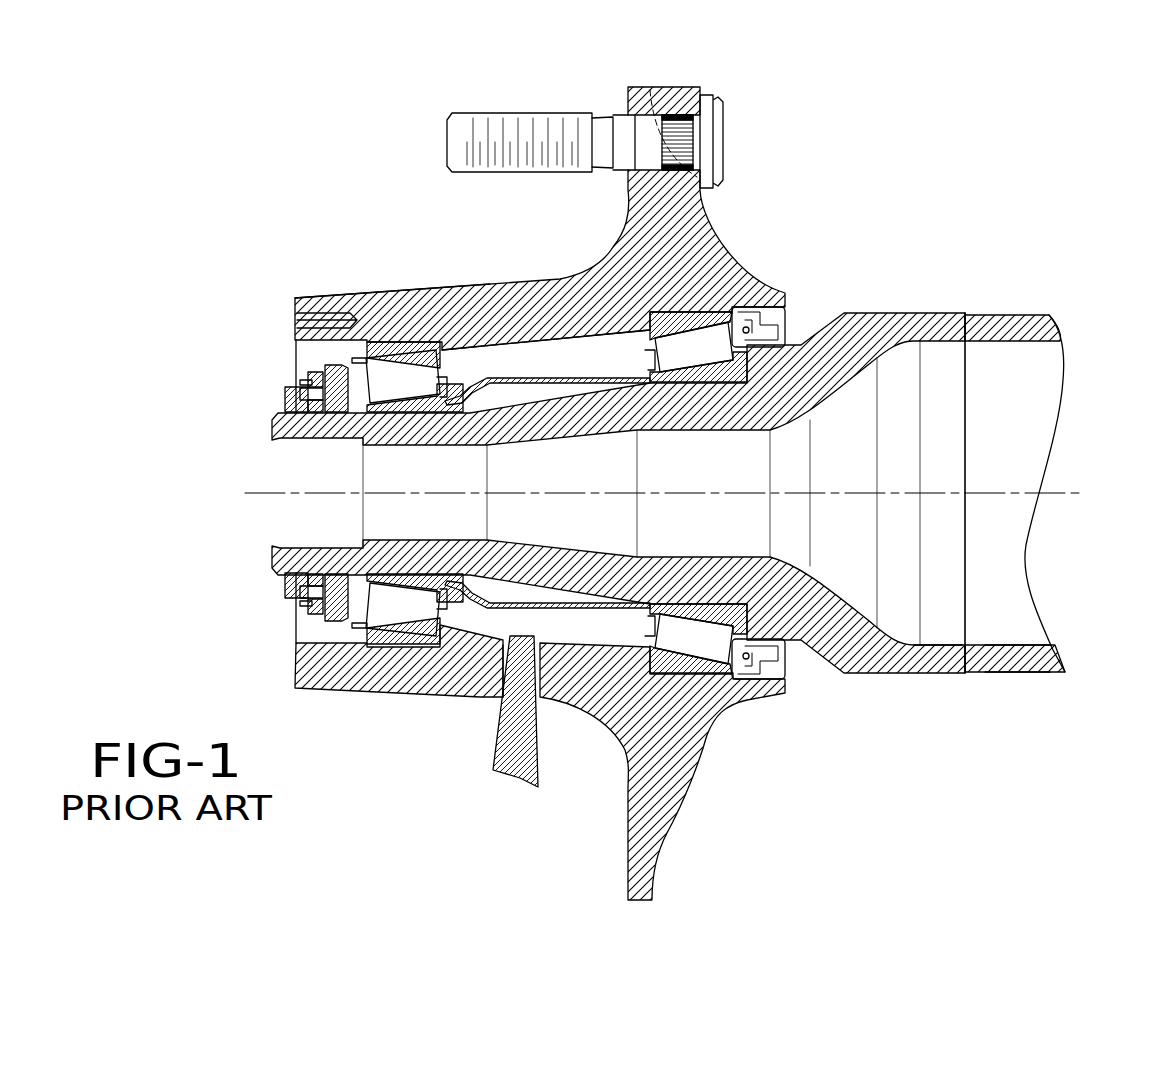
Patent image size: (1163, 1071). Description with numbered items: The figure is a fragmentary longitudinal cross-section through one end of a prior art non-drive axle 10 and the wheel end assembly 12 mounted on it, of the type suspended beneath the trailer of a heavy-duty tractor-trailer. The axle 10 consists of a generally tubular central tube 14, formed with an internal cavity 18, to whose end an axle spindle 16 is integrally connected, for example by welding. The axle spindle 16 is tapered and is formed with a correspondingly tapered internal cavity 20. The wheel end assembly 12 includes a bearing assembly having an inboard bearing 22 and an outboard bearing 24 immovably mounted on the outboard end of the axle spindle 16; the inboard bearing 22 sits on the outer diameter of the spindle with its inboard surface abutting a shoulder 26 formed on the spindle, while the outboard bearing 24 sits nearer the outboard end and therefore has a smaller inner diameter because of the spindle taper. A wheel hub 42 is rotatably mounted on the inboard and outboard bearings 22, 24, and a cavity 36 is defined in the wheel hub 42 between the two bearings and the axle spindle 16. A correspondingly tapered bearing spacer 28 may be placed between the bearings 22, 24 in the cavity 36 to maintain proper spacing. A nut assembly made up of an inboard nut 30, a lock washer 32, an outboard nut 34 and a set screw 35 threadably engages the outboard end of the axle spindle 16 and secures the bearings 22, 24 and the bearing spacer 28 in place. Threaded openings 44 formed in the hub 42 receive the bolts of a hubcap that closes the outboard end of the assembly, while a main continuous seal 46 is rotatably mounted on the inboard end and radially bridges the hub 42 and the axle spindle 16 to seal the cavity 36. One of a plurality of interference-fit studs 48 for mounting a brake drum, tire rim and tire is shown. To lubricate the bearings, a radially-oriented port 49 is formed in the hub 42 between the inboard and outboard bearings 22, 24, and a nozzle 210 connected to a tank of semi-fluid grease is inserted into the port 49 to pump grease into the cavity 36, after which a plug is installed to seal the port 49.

The non-drive axle 10 is at (1014, 313).
The wheel end assembly 12 is at (731, 253).
The central tube 14 is at (1017, 665).
The axle spindle 16 is at (273, 560).
The internal cavity 18 is at (1013, 648).
The tapered internal cavity 20 is at (941, 647).
The inboard bearing 22 is at (698, 668).
The outboard bearing 24 is at (393, 637).
The shoulder 26 is at (734, 606).
The bearing spacer 28 is at (518, 377).
The inboard nut 30 is at (333, 366).
The lock washer 32 is at (317, 372).
The outboard nut 34 is at (285, 393).
The set screw 35 is at (302, 378).
The cavity 36 is at (566, 341).
The wheel hub 42 is at (340, 297).
The threaded openings 44 is at (310, 318).
The main continuous seal 46 is at (788, 332).
The interference-fit stud 48 is at (528, 110).
The radially-oriented port 49 is at (498, 714).
The nozzle 210 is at (494, 750).